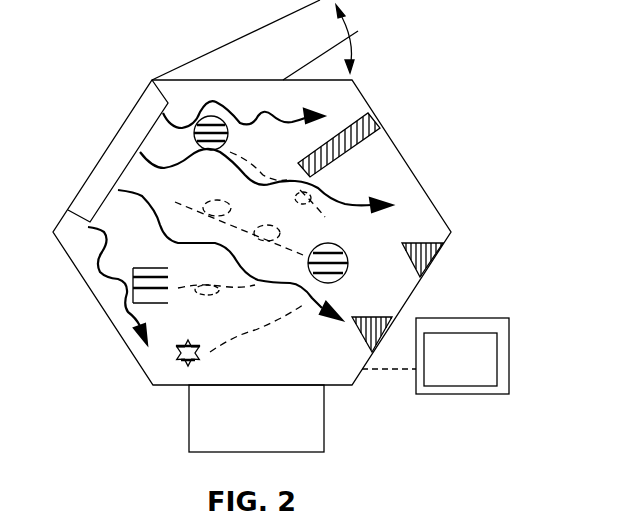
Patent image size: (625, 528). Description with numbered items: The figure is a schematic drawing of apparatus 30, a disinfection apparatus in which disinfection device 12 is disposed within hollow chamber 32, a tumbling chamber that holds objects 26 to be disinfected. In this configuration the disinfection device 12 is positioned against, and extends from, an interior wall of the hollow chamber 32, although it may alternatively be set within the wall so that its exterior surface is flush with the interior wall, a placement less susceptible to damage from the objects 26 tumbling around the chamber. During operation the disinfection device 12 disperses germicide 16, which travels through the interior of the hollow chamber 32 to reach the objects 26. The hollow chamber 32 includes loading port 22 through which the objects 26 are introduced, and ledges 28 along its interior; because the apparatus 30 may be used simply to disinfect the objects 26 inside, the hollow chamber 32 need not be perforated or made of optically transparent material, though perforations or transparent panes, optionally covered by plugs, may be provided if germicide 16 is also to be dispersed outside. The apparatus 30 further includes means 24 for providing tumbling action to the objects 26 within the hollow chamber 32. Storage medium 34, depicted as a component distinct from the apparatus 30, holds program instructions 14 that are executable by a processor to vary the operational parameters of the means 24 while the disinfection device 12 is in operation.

The disinfection device 12 is at (118, 155).
The program instructions 14 is at (473, 371).
The germicide 16 is at (260, 120).
The loading port 22 is at (271, 40).
The means for providing tumbling action 24 is at (306, 423).
The objects 26 is at (229, 133).
The ledges 28 is at (340, 148).
The apparatus 30 is at (446, 112).
The hollow chamber 32 is at (418, 180).
The storage medium 34 is at (480, 317).